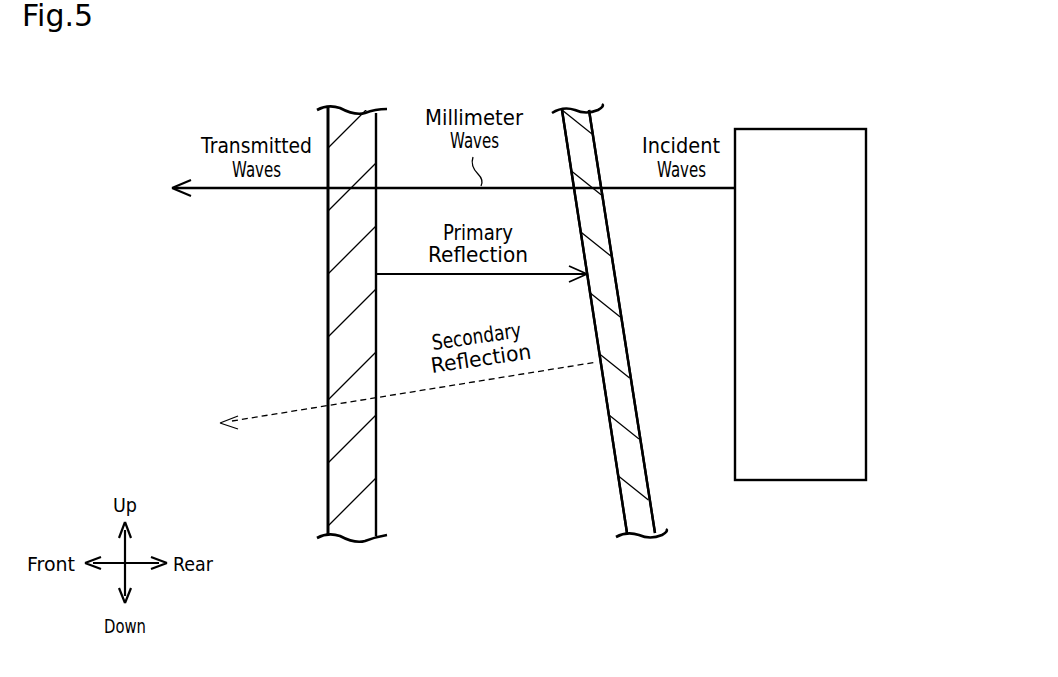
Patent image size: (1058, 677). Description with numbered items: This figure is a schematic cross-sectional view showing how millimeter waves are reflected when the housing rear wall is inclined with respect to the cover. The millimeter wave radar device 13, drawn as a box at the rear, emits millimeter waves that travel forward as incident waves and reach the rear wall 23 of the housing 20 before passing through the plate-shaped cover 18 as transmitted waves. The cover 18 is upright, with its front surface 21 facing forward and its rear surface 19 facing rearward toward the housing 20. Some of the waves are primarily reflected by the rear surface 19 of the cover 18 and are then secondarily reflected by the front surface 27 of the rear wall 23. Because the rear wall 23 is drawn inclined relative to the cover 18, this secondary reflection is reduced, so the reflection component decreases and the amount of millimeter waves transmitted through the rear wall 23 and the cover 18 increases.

The millimeter wave radar device 13 is at (869, 224).
The cover 18 is at (327, 493).
The rear surface 19 is at (377, 450).
The housing 20 is at (637, 410).
The front surface 21 is at (327, 320).
The rear wall 23 is at (645, 472).
The front surface 27 is at (607, 400).